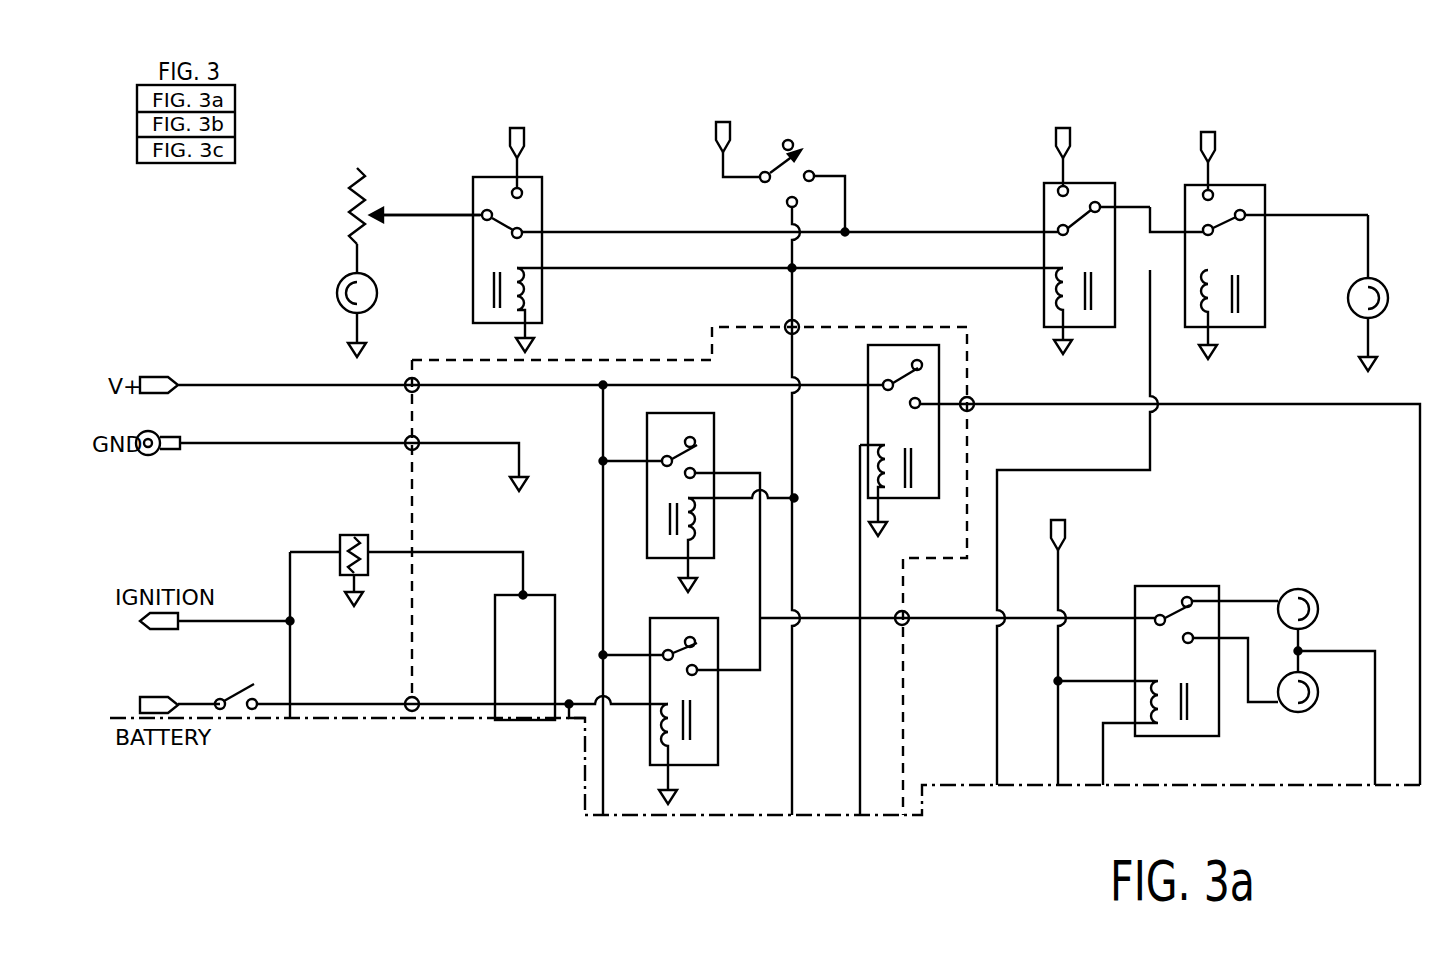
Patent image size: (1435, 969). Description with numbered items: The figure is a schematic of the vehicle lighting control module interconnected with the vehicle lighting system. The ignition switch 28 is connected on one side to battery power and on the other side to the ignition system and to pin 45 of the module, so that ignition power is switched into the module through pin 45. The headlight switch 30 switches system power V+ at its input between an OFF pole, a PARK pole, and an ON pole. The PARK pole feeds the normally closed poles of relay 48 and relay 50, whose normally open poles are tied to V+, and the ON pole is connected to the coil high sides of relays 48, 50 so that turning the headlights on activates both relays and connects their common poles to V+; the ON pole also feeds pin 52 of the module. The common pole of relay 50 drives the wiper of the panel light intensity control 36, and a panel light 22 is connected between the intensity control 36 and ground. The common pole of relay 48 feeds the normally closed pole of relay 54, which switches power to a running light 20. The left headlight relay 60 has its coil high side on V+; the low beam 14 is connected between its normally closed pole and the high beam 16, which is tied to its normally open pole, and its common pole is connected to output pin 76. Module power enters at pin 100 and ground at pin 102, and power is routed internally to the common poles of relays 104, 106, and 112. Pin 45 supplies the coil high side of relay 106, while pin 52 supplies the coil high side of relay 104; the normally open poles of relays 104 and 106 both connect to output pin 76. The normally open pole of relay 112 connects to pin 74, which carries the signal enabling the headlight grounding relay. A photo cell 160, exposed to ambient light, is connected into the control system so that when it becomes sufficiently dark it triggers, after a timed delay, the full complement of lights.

The low beam headlight 14 is at (1305, 590).
The high beam headlight 16 is at (1298, 712).
The running light 20 is at (1382, 286).
The panel light 22 is at (340, 285).
The ignition switch 28 is at (229, 687).
The headlight switch 30 is at (812, 155).
The panel light intensity control 36 is at (345, 175).
The pin of module 45 is at (415, 697).
The relay 48 is at (1100, 183).
The relay 50 is at (475, 177).
The pin of module 52 is at (800, 321).
The relay 54 is at (1250, 185).
The left headlight relay 60 is at (1215, 586).
The pin of module 74 is at (975, 399).
The output pin of module 76 is at (905, 624).
The pin of module 100 is at (405, 390).
The pin of module 102 is at (407, 448).
The relay 104 is at (714, 418).
The relay 106 is at (718, 705).
The relay 112 is at (868, 407).
The photo cell 160 is at (340, 545).